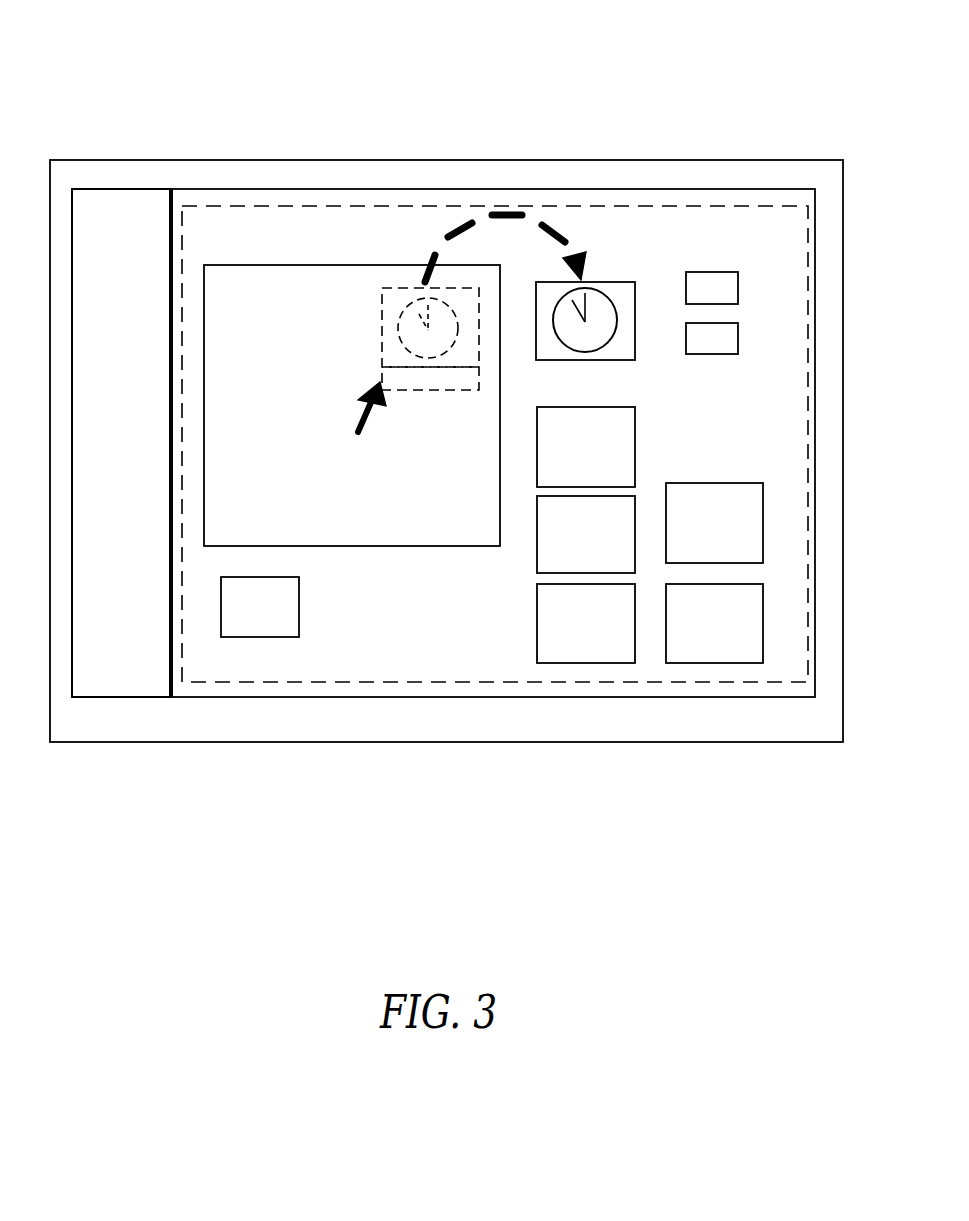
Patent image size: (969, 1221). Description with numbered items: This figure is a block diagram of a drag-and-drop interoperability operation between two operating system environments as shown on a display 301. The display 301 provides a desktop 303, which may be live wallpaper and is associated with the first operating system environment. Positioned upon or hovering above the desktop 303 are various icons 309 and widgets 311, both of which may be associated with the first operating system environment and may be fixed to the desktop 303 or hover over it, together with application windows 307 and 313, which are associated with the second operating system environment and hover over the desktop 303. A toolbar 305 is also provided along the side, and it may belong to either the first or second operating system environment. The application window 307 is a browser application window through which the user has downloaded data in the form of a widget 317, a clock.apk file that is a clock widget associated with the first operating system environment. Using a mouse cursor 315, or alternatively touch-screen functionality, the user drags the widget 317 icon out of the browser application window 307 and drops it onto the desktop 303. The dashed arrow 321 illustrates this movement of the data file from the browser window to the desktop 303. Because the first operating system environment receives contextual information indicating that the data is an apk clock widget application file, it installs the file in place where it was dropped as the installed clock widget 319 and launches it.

The display 301 is at (775, 158).
The desktop 303 is at (233, 227).
The toolbar 305 is at (123, 210).
The application window 307 is at (455, 493).
The icons 309 is at (723, 338).
The widgets 311 is at (612, 442).
The application window 313 is at (275, 621).
The mouse cursor 315 is at (360, 432).
The widget 317 is at (390, 317).
The installed clock widget 319 is at (616, 295).
The dashed arrow 321 is at (557, 222).